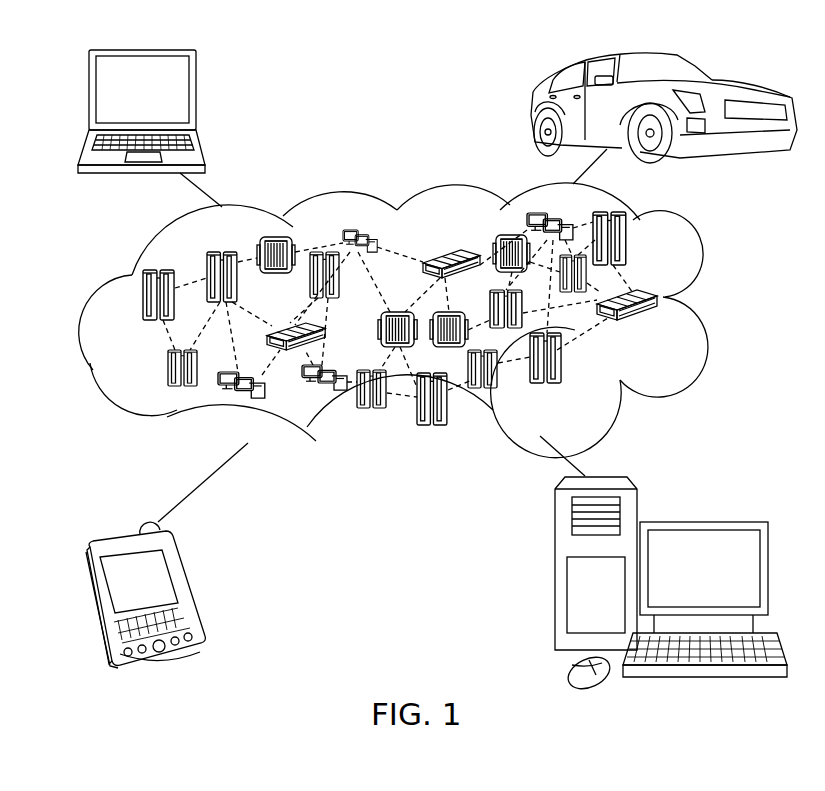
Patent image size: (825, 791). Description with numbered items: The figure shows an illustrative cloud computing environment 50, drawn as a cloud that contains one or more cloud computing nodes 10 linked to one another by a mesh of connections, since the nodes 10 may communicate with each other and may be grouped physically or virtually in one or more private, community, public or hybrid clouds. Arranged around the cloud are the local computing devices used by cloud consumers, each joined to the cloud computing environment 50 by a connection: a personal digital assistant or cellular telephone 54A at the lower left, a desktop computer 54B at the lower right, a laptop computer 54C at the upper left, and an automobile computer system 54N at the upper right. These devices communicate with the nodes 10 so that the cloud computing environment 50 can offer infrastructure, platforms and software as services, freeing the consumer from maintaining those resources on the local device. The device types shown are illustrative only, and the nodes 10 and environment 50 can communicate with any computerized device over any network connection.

The cloud computing node 10 is at (660, 323).
The cloud computing environment 50 is at (705, 300).
The personal digital assistant or cellular telephone 54A is at (190, 592).
The desktop computer 54B is at (702, 520).
The laptop computer 54C is at (196, 95).
The automobile computer system 54N is at (535, 108).